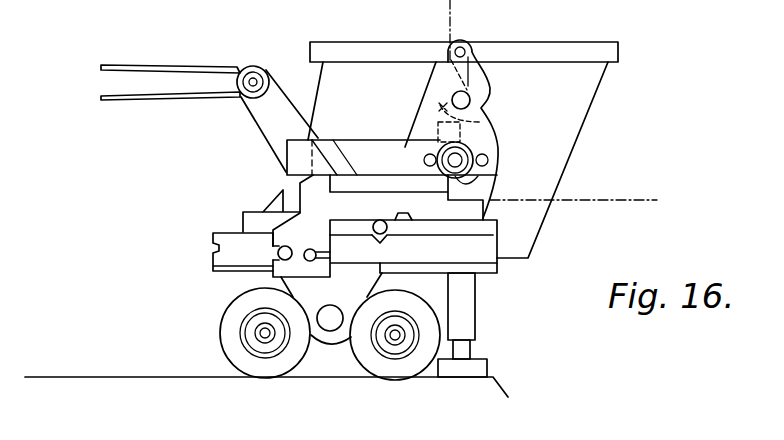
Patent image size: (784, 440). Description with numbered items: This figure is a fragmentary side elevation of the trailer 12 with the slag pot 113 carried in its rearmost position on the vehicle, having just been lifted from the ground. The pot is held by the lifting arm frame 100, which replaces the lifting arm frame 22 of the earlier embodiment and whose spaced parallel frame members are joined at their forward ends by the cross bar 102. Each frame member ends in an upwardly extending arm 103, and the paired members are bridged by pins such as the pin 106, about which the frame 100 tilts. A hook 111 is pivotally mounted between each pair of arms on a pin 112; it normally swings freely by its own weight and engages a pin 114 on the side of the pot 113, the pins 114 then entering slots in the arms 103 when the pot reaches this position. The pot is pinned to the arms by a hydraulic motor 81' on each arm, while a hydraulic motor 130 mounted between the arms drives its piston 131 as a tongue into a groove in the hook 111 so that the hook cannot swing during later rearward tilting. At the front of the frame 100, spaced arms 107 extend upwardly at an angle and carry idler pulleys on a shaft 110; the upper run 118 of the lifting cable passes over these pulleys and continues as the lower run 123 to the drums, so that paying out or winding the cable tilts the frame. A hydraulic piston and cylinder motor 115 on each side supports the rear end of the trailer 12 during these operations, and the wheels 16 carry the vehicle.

The trailer 12 is at (220, 248).
The wheels 16 is at (228, 320).
The lifting arm frame 22 is at (588, 204).
The hydraulic motor 81' is at (499, 159).
The lifting arm frame 100 is at (392, 118).
The cross bar 102 is at (300, 160).
The upwardly extending arm 103 is at (432, 78).
The pin 106 is at (424, 163).
The arm 107 is at (279, 83).
The shaft 110 is at (250, 68).
The hook 111 is at (483, 80).
The pin 112 is at (480, 28).
The pot 113 is at (596, 95).
The pin 114 is at (470, 100).
The hydraulic piston and cylinder motor 115 is at (470, 308).
The upper run 118 is at (141, 67).
The lower run 123 is at (168, 100).
The hydraulic motor 130 is at (480, 122).
The piston 131 is at (443, 103).